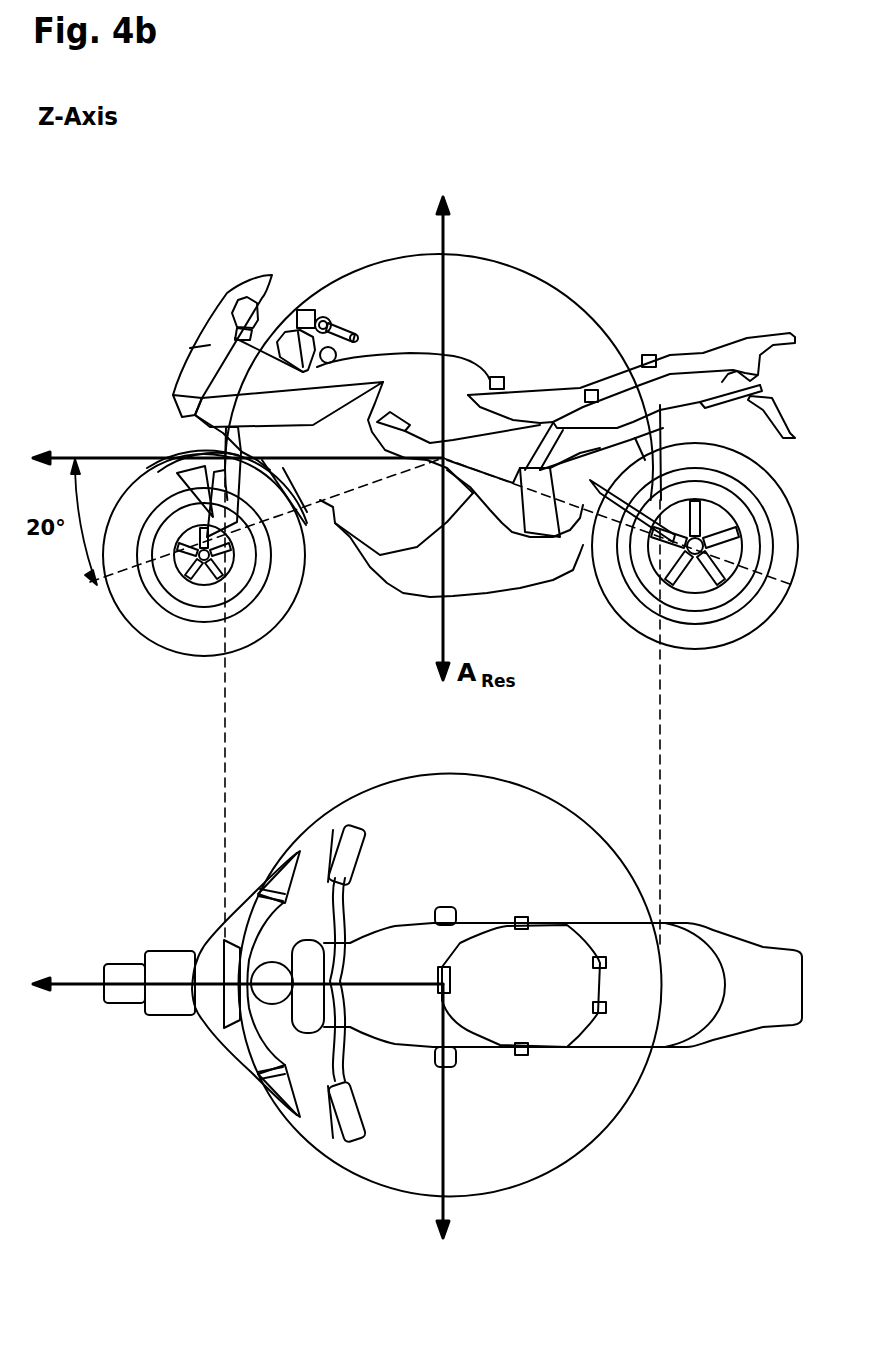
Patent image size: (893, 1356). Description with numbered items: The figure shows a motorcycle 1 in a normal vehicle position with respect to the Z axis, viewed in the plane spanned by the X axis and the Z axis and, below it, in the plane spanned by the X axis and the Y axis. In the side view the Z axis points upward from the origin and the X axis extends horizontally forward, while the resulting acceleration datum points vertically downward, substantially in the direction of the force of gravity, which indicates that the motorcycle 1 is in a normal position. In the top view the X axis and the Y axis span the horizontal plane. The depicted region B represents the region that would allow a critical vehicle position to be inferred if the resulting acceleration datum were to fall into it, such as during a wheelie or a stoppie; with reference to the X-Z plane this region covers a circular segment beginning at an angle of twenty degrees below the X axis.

The motorcycle 1 is at (640, 290).
The spherical region around center of gravity B is at (336, 281).
The X axis X is at (223, 723).
The Y axis Y is at (444, 832).
The Z axis Z is at (441, 426).